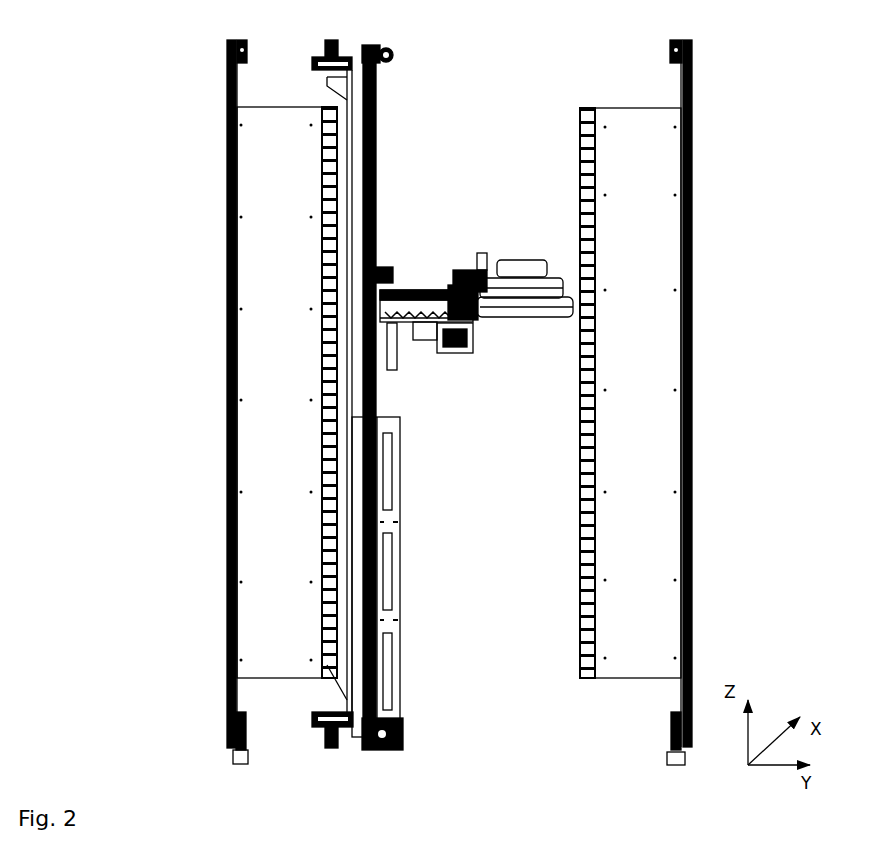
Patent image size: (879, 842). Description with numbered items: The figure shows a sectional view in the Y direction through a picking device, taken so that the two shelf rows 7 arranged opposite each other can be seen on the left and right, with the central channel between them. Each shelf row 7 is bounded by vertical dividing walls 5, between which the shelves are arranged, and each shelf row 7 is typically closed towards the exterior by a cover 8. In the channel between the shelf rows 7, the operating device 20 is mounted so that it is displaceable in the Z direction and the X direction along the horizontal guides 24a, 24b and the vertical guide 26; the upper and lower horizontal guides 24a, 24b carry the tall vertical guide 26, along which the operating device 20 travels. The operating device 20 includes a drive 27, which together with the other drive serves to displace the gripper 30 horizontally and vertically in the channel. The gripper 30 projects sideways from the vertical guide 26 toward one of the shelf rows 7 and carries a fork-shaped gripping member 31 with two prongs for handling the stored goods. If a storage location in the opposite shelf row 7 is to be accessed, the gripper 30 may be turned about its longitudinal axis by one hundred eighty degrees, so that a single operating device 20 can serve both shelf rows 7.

The vertical dividing wall 5 is at (275, 430).
The shelf row 7 is at (210, 348).
The cover 8 is at (683, 522).
The operating device 20 is at (405, 423).
The horizontal guide 24a is at (322, 735).
The horizontal guide 24b is at (325, 52).
The vertical guide 26 is at (378, 103).
The drive 27 is at (430, 262).
The gripper 30 is at (533, 310).
The gripping member 31 is at (430, 283).